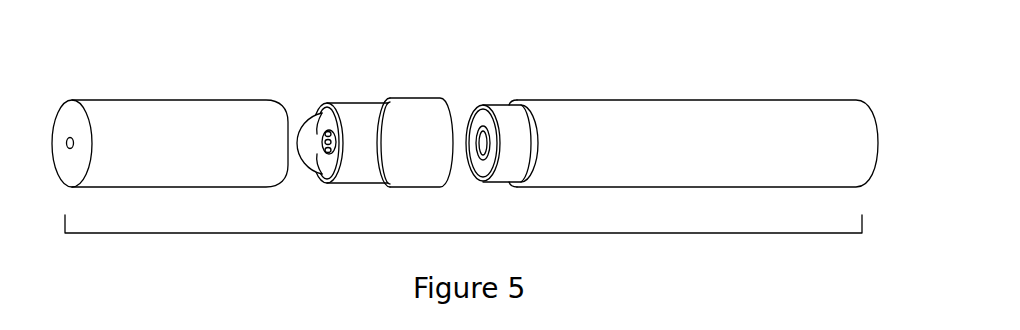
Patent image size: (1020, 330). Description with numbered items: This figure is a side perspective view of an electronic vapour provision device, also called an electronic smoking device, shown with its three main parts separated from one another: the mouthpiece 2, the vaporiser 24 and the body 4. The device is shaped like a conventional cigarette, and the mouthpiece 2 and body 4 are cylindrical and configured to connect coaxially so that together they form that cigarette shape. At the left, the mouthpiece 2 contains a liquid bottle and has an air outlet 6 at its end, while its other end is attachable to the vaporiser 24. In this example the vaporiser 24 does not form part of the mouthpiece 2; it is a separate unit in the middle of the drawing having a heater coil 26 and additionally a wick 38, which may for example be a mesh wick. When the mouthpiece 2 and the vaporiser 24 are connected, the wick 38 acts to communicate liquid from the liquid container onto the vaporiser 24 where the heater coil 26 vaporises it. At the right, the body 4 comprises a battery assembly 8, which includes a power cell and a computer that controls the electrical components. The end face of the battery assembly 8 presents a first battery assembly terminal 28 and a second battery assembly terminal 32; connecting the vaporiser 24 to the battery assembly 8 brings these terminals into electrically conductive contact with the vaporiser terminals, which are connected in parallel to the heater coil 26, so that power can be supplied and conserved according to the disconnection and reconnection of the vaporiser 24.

The mouthpiece 2 is at (173, 128).
The body 4 is at (833, 128).
The air outlet 6 is at (74, 142).
The battery assembly 8 is at (655, 130).
The vaporiser 24 is at (385, 138).
The heater coil 26 is at (336, 137).
The first battery assembly terminal 28 is at (500, 106).
The second battery assembly terminal 32 is at (490, 144).
The wick 38 is at (304, 130).